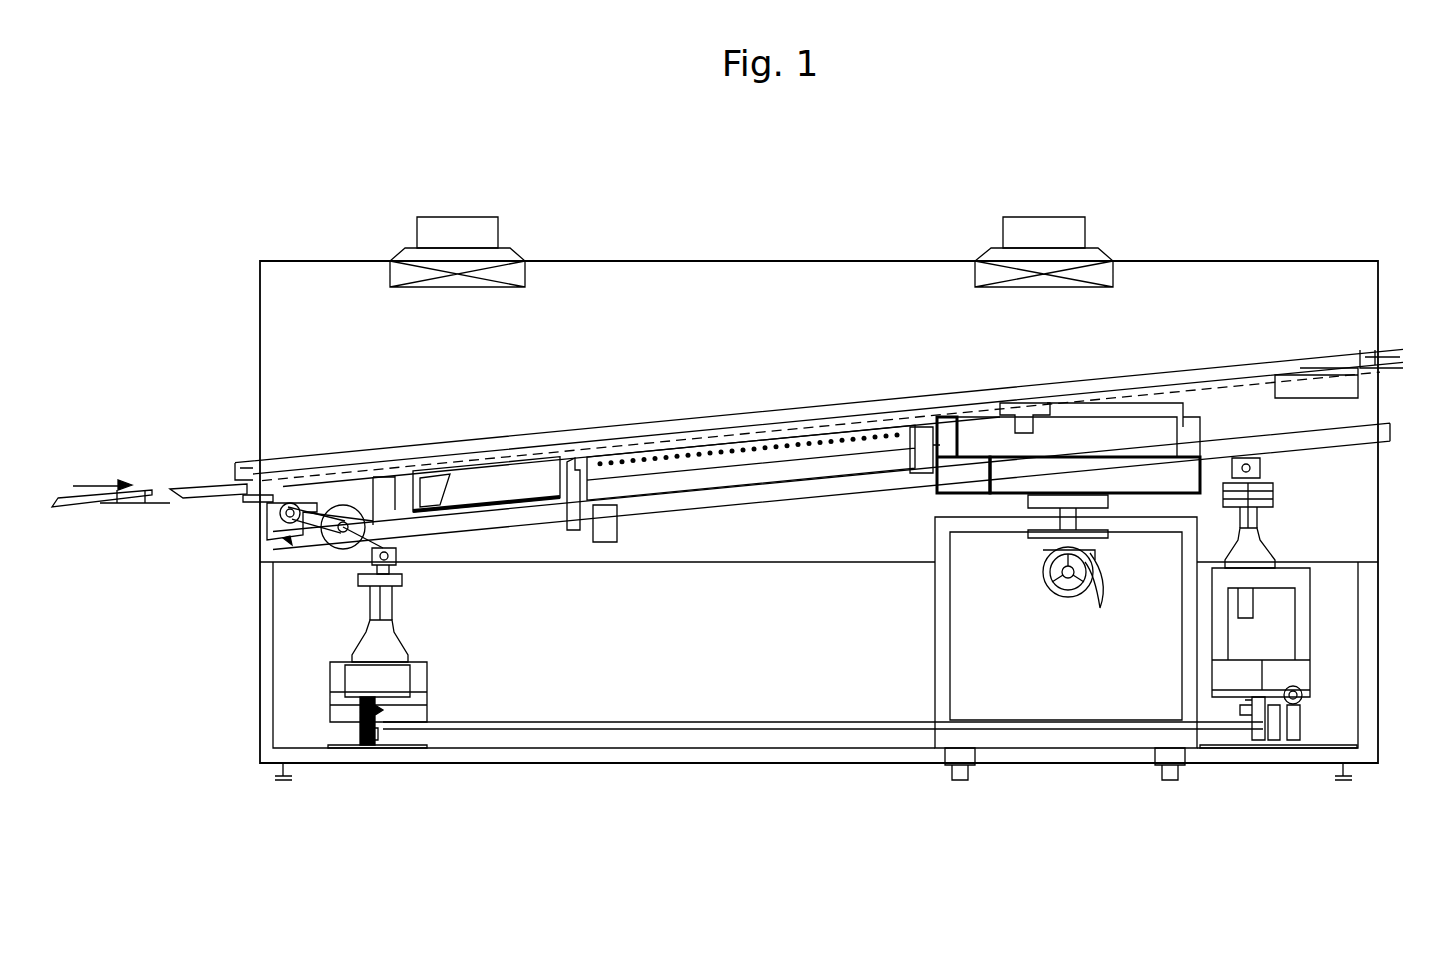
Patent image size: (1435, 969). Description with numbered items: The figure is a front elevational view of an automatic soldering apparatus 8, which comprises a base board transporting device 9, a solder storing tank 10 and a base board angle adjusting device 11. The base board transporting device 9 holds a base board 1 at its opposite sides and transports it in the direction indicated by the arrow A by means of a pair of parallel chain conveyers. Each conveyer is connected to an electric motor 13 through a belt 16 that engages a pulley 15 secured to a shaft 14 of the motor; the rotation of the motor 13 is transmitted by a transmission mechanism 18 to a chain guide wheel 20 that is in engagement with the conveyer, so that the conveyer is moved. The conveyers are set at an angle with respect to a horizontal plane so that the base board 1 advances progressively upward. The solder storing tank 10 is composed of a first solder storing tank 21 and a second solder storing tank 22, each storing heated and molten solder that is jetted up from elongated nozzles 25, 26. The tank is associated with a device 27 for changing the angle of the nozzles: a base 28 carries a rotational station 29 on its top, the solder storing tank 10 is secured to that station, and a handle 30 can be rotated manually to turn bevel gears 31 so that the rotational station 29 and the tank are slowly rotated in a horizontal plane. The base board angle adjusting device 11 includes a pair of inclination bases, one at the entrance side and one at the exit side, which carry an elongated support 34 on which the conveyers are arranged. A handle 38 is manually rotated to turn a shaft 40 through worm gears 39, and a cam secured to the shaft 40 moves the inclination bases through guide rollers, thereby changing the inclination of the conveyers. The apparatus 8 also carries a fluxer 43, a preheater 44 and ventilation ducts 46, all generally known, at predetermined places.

The base board 1 is at (119, 512).
The automatic soldering apparatus 8 is at (1140, 252).
The base board transporting device 9 is at (280, 552).
The solder storing tank 10 is at (930, 495).
The base board angle adjusting device 11 is at (824, 641).
The electric motor 13 is at (348, 505).
The shaft 14 is at (325, 536).
The pulley 15 is at (350, 548).
The belt 16 is at (312, 510).
The transmission mechanism 18 is at (262, 517).
The chain guide wheel 20 is at (243, 460).
The first solder storing tank 21 is at (965, 495).
The second solder storing tank 22 is at (1142, 495).
The elongated nozzle 25 is at (988, 405).
The elongated nozzle 26 is at (1127, 405).
The device for changing the angle of the nozzles 27 is at (1042, 590).
The base 28 is at (933, 672).
The rotational station 29 is at (1110, 505).
The handle 30 is at (1060, 598).
The bevel gears 31 is at (1100, 598).
The elongated support 34 is at (533, 530).
The handle 38 is at (1304, 695).
The worm gears 39 is at (1302, 726).
The shaft 40 is at (830, 730).
The fluxer 43 is at (500, 468).
The preheater 44 is at (708, 440).
The ventilation ducts 46 is at (466, 217).
The base board transporting direction A is at (113, 475).